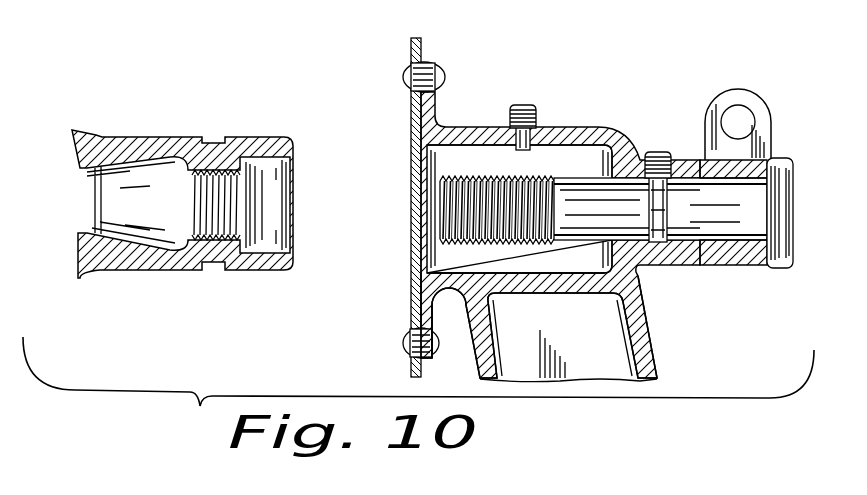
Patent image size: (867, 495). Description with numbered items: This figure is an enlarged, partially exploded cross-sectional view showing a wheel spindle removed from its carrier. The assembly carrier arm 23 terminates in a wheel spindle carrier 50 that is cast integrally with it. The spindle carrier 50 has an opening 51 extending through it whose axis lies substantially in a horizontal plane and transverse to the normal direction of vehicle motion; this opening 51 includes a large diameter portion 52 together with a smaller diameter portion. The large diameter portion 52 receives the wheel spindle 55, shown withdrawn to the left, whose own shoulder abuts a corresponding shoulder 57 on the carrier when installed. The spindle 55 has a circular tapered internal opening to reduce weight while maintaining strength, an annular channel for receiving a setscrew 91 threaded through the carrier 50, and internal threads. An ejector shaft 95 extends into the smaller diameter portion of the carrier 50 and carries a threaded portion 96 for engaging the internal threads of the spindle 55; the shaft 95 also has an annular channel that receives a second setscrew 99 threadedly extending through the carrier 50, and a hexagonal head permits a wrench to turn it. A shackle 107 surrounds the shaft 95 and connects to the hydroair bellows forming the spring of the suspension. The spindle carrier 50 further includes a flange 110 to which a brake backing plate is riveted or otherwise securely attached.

The assembly carrier arm 23 is at (648, 327).
The wheel spindle carrier 50 is at (618, 132).
The opening 51 is at (501, 172).
The large diameter portion 52 is at (445, 272).
The wheel spindle 55 is at (167, 137).
The shoulder 57 is at (412, 277).
The setscrew 91 is at (532, 105).
The ejector shaft 95 is at (593, 243).
The threaded portion 96 is at (533, 177).
The setscrew 99 is at (652, 152).
The shackle 107 is at (757, 103).
The flange 110 is at (423, 56).